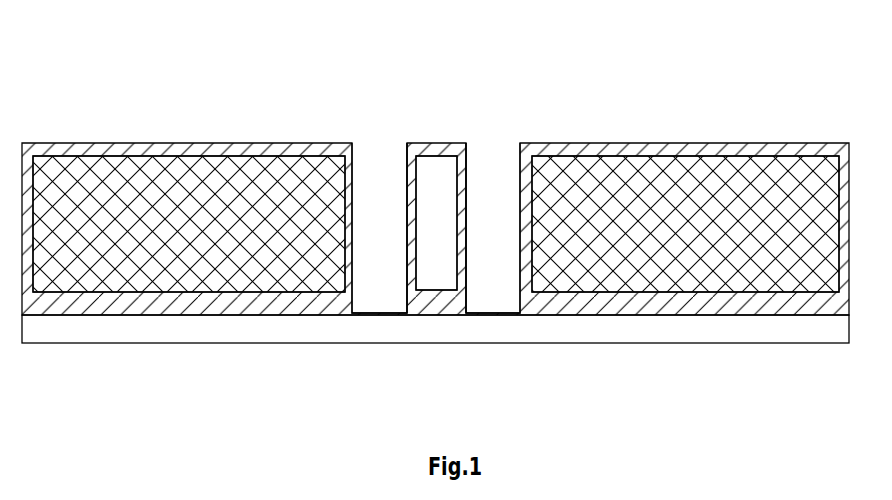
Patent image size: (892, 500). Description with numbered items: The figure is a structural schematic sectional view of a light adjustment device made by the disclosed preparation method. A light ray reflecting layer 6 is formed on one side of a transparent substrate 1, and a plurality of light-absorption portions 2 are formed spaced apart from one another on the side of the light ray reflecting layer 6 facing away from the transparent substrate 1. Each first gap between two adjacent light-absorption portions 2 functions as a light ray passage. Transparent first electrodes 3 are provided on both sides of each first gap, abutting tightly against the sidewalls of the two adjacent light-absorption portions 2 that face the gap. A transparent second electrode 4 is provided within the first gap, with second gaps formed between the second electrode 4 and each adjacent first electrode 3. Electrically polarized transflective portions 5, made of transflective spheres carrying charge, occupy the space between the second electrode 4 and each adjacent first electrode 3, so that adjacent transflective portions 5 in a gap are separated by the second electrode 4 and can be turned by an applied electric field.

The transparent substrate 1 is at (190, 332).
The light-absorption portions 2 is at (225, 193).
The first electrodes 3 is at (363, 190).
The second electrode 4 is at (430, 156).
The transflective portions 5 is at (505, 255).
The light ray reflecting layer 6 is at (562, 305).